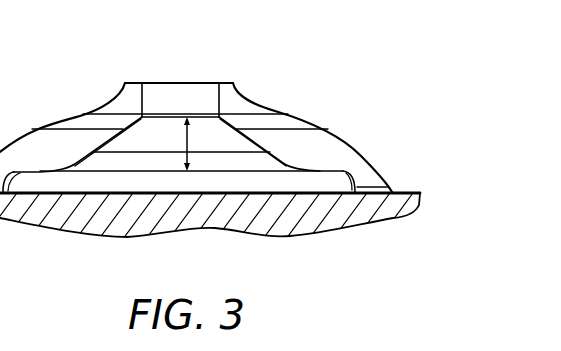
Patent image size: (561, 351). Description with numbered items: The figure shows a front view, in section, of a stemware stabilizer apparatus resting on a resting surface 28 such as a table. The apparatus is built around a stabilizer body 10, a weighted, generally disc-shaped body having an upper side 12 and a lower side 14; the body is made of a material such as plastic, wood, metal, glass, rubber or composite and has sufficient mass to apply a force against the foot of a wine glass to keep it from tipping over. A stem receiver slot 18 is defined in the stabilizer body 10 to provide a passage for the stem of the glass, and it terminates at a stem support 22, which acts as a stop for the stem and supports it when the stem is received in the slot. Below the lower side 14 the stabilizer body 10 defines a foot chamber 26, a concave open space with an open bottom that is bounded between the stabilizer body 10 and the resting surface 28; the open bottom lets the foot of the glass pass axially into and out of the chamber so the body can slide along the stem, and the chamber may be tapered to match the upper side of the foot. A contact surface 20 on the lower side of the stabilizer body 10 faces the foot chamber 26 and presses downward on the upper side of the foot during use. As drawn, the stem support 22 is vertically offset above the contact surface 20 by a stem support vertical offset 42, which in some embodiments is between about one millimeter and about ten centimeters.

The stabilizer body 10 is at (334, 81).
The upper side 12 is at (273, 109).
The lower side 14 is at (285, 163).
The stem receiver slot 18 is at (183, 92).
The contact surface 20 is at (315, 178).
The stem support 22 is at (153, 102).
The foot chamber 26 is at (114, 169).
The resting surface 28 is at (396, 185).
The stem support vertical offset 42 is at (185, 143).